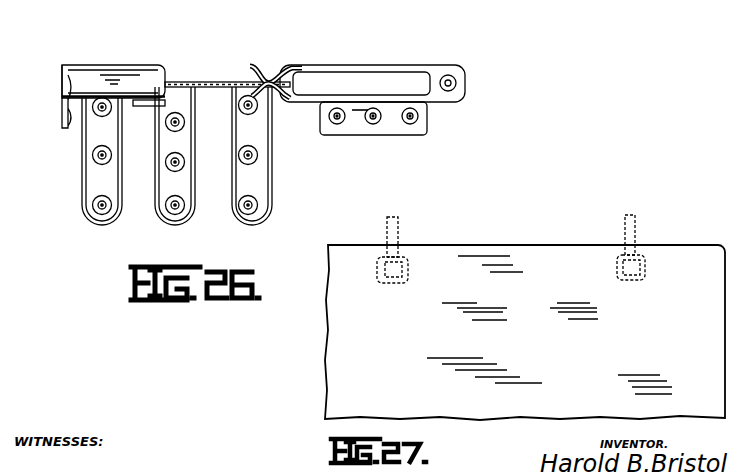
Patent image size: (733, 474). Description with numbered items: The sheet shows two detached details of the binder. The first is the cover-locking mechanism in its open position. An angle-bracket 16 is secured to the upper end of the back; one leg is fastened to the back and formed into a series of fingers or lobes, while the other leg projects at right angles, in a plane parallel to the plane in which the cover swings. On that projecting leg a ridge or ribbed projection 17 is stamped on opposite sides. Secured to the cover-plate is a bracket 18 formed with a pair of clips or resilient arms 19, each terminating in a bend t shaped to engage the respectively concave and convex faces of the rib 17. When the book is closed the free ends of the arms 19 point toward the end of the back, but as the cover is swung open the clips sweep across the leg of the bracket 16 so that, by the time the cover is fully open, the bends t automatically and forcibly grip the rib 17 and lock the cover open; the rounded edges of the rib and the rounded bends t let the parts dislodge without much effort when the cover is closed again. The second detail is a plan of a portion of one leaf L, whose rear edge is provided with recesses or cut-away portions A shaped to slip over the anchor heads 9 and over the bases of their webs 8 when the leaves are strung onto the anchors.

In FIG. 27, the web of anchor head 8 is at (398, 218).
In FIG. 27, the anchor head 9 is at (408, 268).
In FIG. 27, the recess of leaf A is at (378, 270).
In FIG. 27, the leaf L is at (518, 252).
In FIG. 26, the angle-bracket 16 is at (180, 95).
In FIG. 26, the ribbed projection 17 is at (285, 75).
In FIG. 26, the bracket 18 is at (60, 115).
In FIG. 26, the resilient arms 19 is at (110, 78).
In FIG. 26, the bends t is at (262, 71).